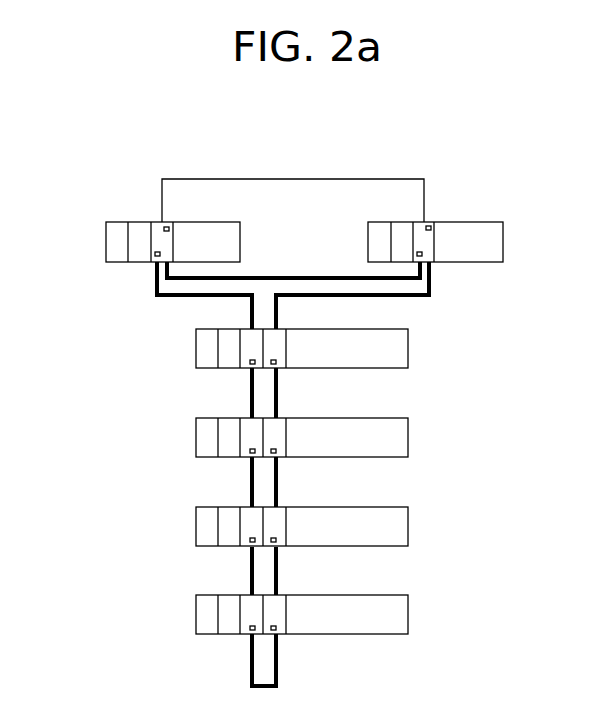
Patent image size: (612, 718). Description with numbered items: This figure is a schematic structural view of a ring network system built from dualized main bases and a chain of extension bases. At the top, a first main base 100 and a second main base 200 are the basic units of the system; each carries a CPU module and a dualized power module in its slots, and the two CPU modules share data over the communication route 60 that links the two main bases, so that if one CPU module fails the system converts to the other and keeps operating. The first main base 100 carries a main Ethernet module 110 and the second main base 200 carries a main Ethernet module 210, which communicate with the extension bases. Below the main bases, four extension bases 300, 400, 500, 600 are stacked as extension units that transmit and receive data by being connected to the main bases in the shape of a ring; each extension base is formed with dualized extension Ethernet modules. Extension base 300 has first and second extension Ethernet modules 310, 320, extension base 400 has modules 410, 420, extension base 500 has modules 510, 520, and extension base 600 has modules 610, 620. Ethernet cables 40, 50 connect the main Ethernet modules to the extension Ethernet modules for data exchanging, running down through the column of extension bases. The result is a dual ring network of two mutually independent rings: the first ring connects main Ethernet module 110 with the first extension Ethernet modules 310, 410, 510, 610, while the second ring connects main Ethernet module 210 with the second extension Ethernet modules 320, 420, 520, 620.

The Ethernet cable 40 is at (154, 288).
The Ethernet cable 50 is at (432, 290).
The communication route 60 is at (294, 179).
The first main base 100 is at (105, 241).
The main Ethernet module 110 is at (159, 220).
The second main base 200 is at (503, 242).
The main Ethernet module 210 is at (428, 220).
The extension base 300 is at (408, 348).
The first extension Ethernet module 310 is at (246, 350).
The second extension Ethernet module 320 is at (278, 348).
The extension base 400 is at (408, 437).
The first extension Ethernet module 410 is at (246, 439).
The second extension Ethernet module 420 is at (278, 437).
The extension base 500 is at (408, 526).
The first extension Ethernet module 510 is at (246, 528).
The second extension Ethernet module 520 is at (278, 526).
The extension base 600 is at (408, 614).
The first extension Ethernet module 610 is at (246, 616).
The second extension Ethernet module 620 is at (278, 614).